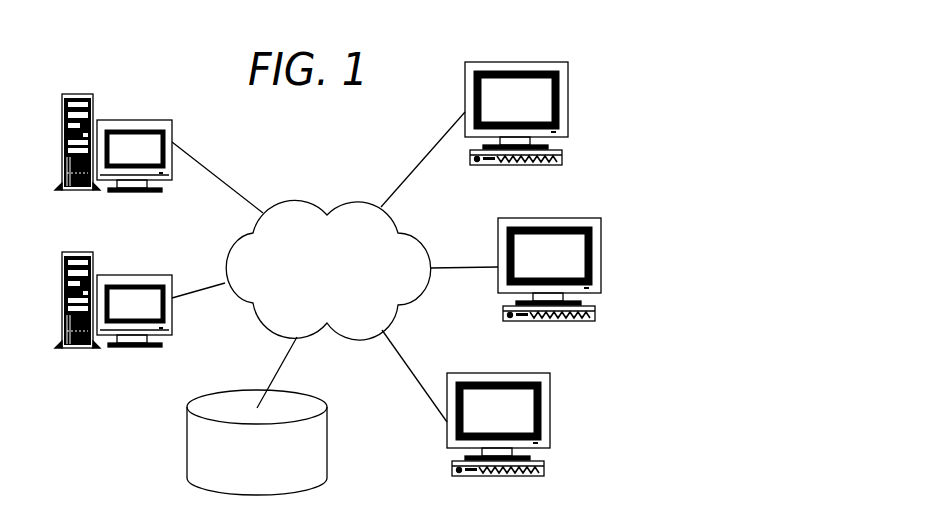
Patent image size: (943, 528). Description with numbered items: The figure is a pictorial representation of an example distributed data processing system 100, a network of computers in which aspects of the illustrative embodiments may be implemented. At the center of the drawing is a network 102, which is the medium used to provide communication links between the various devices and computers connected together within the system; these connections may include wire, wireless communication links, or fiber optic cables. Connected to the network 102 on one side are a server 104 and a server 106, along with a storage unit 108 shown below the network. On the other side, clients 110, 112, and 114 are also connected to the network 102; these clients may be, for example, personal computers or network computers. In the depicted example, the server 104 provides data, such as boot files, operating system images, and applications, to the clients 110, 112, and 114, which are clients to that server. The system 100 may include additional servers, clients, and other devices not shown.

The distributed data processing system 100 is at (141, 428).
The network 102 is at (293, 197).
The server 104 is at (135, 120).
The server 106 is at (133, 275).
The storage unit 108 is at (327, 432).
The client 110 is at (568, 104).
The client 112 is at (603, 262).
The client 114 is at (552, 412).